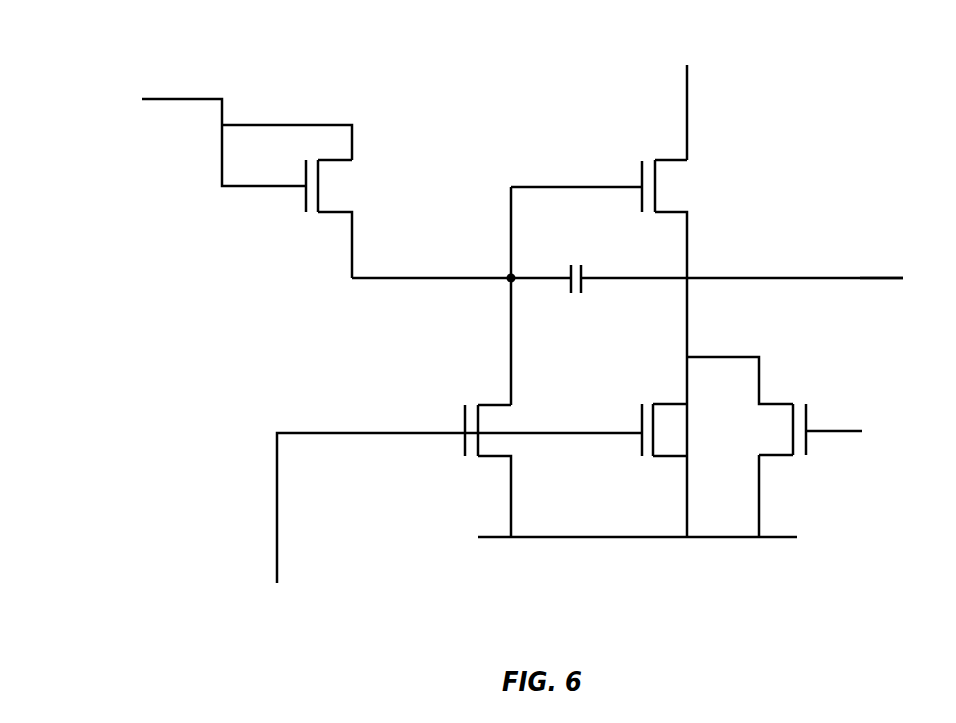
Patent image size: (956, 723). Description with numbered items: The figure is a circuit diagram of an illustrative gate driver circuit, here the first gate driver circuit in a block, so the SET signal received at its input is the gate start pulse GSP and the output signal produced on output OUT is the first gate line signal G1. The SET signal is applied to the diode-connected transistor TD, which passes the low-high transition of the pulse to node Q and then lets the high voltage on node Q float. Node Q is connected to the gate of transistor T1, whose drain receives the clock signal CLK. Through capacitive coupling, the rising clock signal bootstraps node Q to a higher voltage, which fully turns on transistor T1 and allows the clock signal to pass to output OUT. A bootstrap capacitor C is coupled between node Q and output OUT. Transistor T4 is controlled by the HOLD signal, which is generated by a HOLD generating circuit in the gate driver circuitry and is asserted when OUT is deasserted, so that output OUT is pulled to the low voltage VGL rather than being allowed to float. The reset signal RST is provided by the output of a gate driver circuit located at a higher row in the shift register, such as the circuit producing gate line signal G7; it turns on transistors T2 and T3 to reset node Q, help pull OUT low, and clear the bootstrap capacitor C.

The diode-connected transistor TD is at (345, 219).
The transistor T1 is at (614, 219).
The transistor T2 is at (507, 467).
The transistor T3 is at (661, 444).
The transistor T4 is at (746, 447).
The bootstrap capacitor C is at (629, 286).
The node Q is at (461, 296).
The clock signal CLK is at (688, 98).
The output OUT is at (795, 394).
The first gate line signal G1 is at (893, 265).
The HOLD signal HOLD is at (855, 417).
The low voltage VGL is at (662, 539).
The gate start pulse GSP is at (213, 127).
The reset signal RST is at (448, 489).